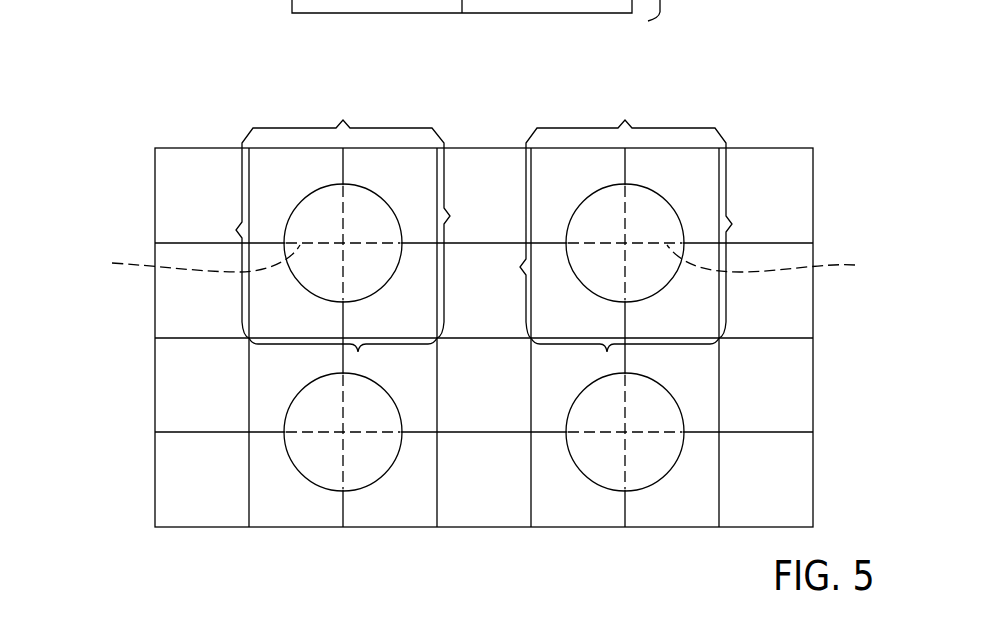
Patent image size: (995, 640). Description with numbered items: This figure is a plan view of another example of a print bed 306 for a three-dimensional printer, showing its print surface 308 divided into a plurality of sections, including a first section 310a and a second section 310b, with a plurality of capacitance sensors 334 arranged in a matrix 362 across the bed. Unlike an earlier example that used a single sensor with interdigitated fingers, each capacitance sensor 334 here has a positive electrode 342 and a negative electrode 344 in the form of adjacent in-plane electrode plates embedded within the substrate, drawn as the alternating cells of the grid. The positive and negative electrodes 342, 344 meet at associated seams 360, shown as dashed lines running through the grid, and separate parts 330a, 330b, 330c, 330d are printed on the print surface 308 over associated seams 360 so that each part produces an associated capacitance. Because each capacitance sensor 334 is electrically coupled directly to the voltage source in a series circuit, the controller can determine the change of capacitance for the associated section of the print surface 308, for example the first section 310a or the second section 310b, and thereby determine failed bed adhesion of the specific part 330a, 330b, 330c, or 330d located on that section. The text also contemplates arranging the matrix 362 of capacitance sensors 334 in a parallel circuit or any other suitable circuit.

The print bed 306 is at (414, 263).
The print surface 308 is at (484, 337).
The first section 310a is at (365, 395).
The second section 310b is at (606, 400).
The first part 330a is at (317, 187).
The second part 330b is at (603, 188).
The third part 330c is at (322, 490).
The fourth part 330d is at (607, 490).
The capacitance sensor 334 is at (265, 243).
The positive electrode 342 is at (177, 197).
The negative electrode 344 is at (254, 197).
The seam 360 is at (484, 264).
The matrix 362 is at (145, 142).